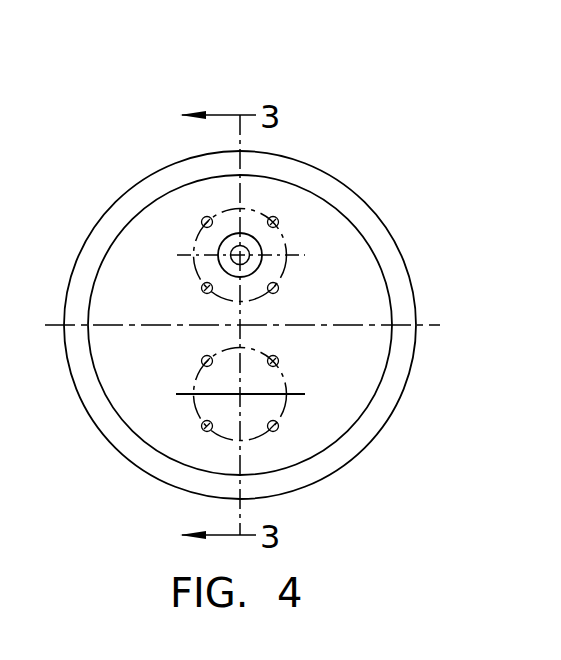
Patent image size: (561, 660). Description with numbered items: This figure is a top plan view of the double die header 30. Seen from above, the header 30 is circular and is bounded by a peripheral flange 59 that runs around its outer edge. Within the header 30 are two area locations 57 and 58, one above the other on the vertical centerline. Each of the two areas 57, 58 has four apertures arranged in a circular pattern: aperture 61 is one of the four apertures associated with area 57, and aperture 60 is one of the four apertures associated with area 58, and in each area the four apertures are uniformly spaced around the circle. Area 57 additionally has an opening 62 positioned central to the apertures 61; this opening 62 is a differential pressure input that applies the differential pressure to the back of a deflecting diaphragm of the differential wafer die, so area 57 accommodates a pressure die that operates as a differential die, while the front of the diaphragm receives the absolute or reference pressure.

The double die header 30 is at (363, 212).
The area location 57 is at (193, 249).
The area location 58 is at (203, 406).
The peripheral flange 59 is at (402, 287).
The aperture 60 is at (278, 432).
The aperture 61 is at (275, 217).
The opening 62 is at (237, 233).